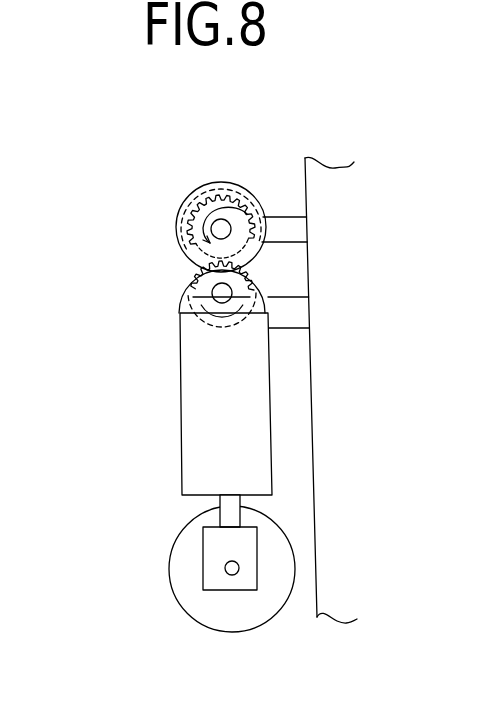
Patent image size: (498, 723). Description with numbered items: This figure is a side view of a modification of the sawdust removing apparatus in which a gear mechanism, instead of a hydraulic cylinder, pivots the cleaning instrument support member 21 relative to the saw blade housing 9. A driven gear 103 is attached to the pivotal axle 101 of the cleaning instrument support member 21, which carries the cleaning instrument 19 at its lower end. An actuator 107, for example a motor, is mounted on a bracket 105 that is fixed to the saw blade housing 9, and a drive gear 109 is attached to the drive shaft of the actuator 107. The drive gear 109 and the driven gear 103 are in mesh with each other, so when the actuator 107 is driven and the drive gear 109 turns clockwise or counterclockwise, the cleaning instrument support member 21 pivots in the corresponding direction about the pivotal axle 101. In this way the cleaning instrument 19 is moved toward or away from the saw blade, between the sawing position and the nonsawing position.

The saw blade housing 9 is at (330, 583).
The cleaning instrument 19 is at (192, 623).
The cleaning instrument support member 21 is at (195, 437).
The pivotal axle 101 is at (214, 297).
The driven gear 103 is at (217, 328).
The bracket 105 is at (280, 228).
The actuator 107 is at (220, 182).
The drive gear 109 is at (197, 249).